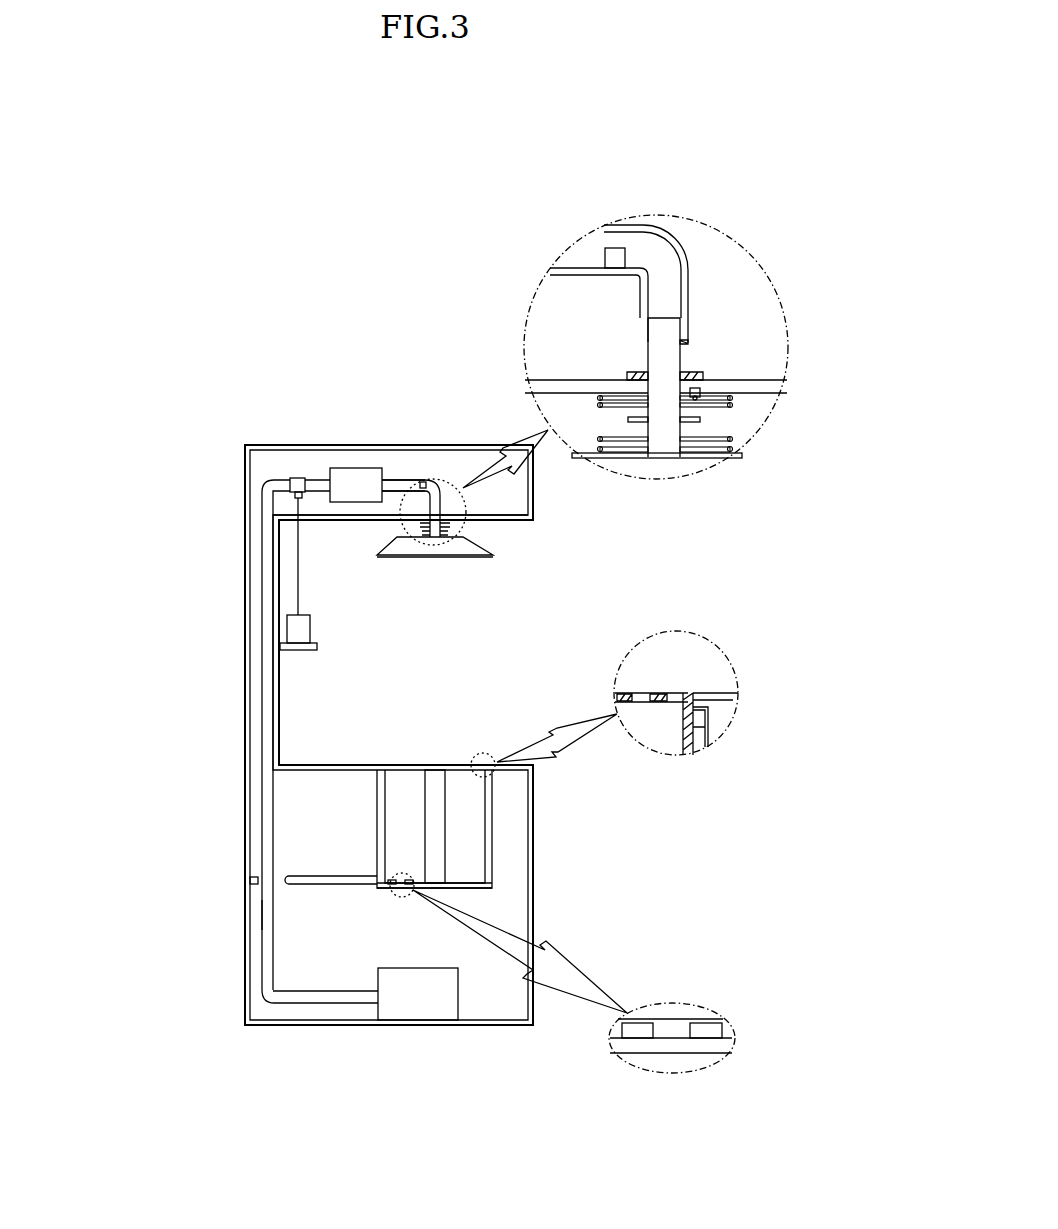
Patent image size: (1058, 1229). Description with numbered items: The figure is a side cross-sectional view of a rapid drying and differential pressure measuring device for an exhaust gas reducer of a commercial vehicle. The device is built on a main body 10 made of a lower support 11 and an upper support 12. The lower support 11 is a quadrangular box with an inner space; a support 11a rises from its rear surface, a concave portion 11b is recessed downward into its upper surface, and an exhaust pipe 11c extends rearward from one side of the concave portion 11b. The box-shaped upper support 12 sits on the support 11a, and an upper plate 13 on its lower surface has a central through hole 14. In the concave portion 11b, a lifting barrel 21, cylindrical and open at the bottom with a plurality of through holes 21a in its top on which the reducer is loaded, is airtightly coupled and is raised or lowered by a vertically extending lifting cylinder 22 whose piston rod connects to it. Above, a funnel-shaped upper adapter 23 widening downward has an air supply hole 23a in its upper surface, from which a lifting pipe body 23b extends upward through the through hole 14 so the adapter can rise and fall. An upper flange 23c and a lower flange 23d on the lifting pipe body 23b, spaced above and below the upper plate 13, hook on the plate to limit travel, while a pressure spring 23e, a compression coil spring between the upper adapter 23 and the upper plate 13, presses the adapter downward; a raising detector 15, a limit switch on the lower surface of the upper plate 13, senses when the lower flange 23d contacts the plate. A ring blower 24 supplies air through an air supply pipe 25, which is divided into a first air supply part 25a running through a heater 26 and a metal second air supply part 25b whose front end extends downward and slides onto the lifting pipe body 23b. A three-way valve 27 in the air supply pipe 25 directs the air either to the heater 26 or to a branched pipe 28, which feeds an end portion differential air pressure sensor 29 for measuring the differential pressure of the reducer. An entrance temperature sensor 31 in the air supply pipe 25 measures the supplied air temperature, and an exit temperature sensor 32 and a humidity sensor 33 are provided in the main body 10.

The main body 10 is at (218, 713).
The lower support 11 is at (715, 690).
The support 11a is at (245, 677).
The concave portion 11b is at (475, 865).
The exhaust pipe 11c is at (300, 876).
The upper support 12 is at (452, 447).
The upper plate 13 is at (352, 521).
The through hole 14 is at (640, 320).
The raising detector 15 is at (704, 376).
The lifting barrel 21 is at (492, 830).
The through holes 21a is at (627, 692).
The lifting cylinder 22 is at (445, 805).
The upper adapter 23 is at (492, 552).
The air supply hole 23a is at (667, 460).
The lifting pipe body 23b is at (686, 352).
The upper flange 23c is at (632, 372).
The lower flange 23d is at (695, 425).
The pressure spring 23e is at (733, 430).
The ring blower 24 is at (458, 1003).
The air supply pipe 25 is at (250, 813).
The first air supply part 25a is at (262, 917).
The second air supply part 25b is at (407, 478).
The heater 26 is at (357, 468).
The 3-way valve 27 is at (297, 477).
The branched pipe 28 is at (298, 555).
The end portion differential air pressure sensor 29 is at (287, 630).
The entrance temperature sensor 31 is at (617, 247).
The exit temperature sensor 32 is at (618, 1030).
The humidity sensor 33 is at (724, 1030).